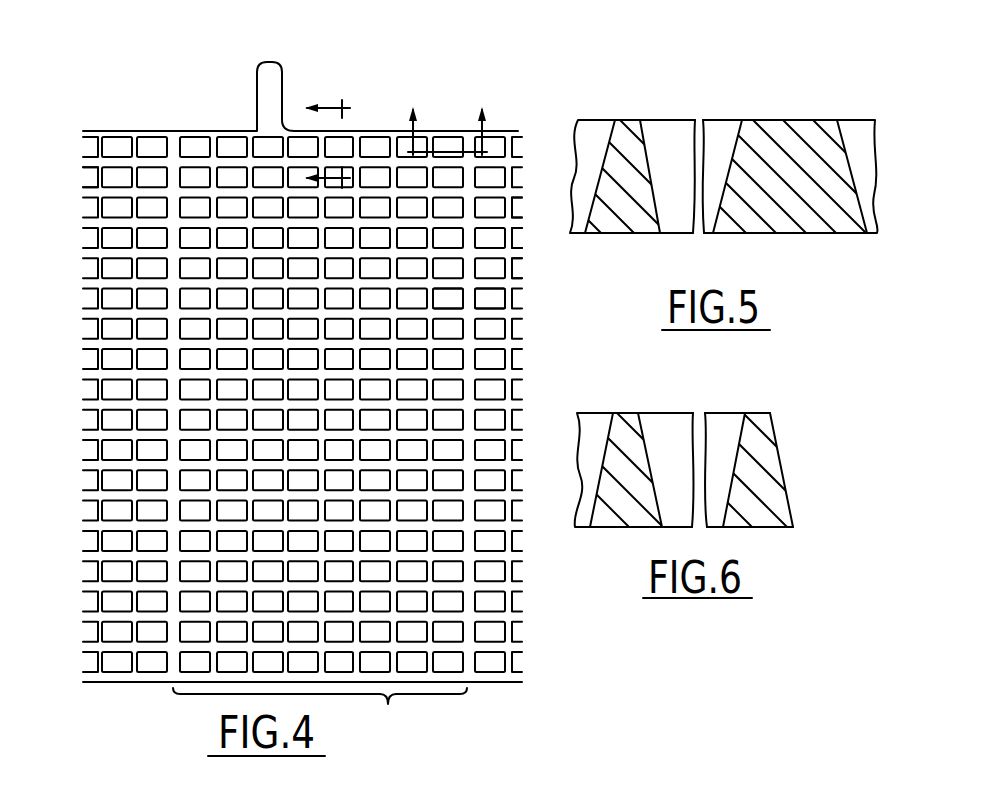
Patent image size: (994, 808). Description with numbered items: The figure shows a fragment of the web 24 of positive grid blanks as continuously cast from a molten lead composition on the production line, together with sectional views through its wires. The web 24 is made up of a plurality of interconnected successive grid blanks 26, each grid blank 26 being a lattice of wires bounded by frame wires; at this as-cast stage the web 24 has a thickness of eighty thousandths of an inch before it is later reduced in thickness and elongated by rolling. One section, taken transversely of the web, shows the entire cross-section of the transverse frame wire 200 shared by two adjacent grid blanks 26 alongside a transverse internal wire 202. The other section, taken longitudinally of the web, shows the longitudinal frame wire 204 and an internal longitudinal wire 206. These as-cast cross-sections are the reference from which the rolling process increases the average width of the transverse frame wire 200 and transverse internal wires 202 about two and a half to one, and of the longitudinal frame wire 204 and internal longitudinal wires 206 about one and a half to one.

In FIG. 4, the web 24 is at (126, 90).
In FIG. 4, the grid blank 26 is at (513, 195).
In FIG. 4, the transverse frame wire 200 is at (175, 143).
In FIG. 5, the transverse frame wire 200 is at (798, 123).
In FIG. 4, the transverse internal wire 202 is at (98, 129).
In FIG. 5, the transverse internal wire 202 is at (640, 100).
In FIG. 6, the transverse internal wire 202 is at (712, 420).
In FIG. 4, the longitudinal frame wire 204 is at (352, 142).
In FIG. 5, the longitudinal frame wire 204 is at (688, 123).
In FIG. 6, the longitudinal frame wire 204 is at (760, 432).
In FIG. 4, the internal longitudinal wire 206 is at (92, 164).
In FIG. 6, the internal longitudinal wire 206 is at (615, 422).